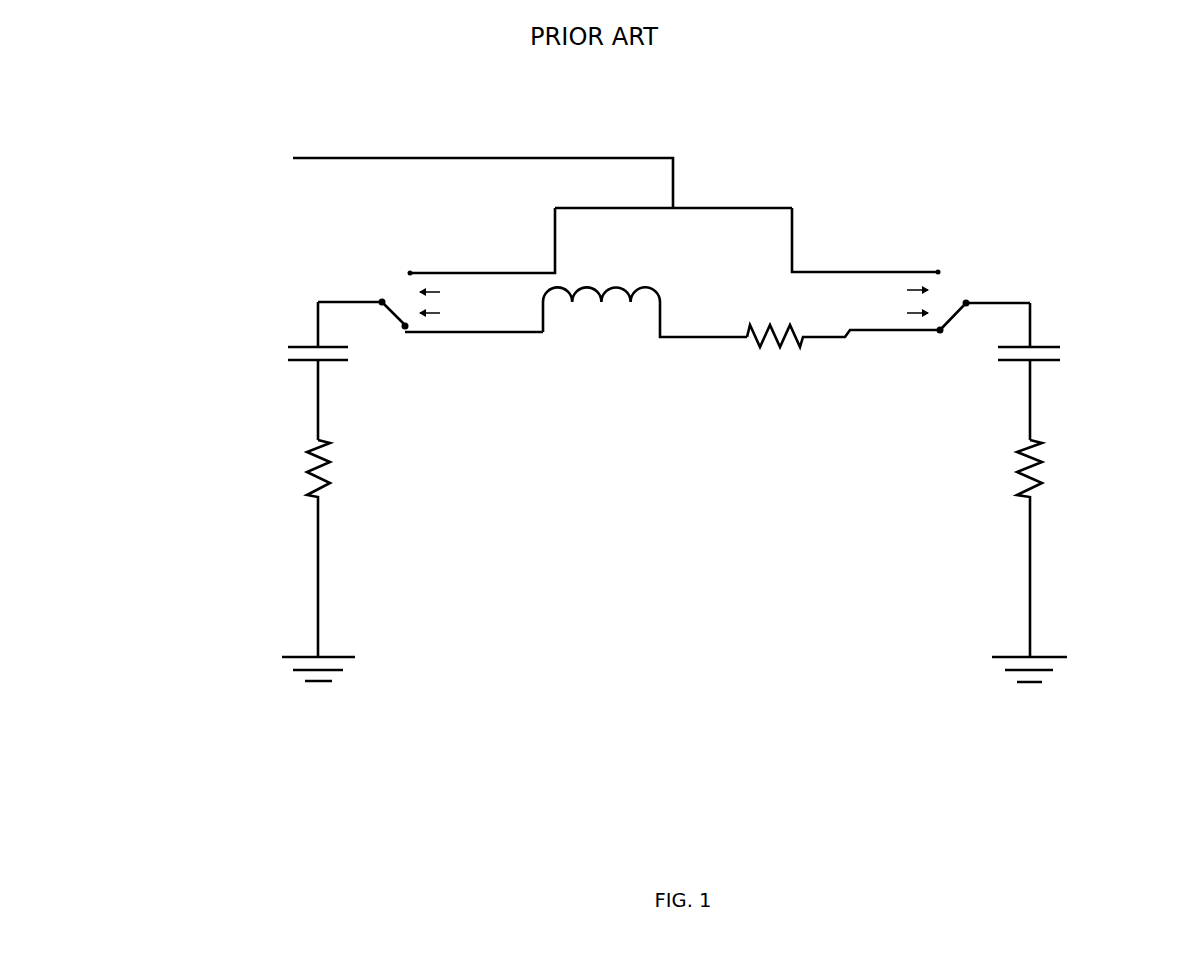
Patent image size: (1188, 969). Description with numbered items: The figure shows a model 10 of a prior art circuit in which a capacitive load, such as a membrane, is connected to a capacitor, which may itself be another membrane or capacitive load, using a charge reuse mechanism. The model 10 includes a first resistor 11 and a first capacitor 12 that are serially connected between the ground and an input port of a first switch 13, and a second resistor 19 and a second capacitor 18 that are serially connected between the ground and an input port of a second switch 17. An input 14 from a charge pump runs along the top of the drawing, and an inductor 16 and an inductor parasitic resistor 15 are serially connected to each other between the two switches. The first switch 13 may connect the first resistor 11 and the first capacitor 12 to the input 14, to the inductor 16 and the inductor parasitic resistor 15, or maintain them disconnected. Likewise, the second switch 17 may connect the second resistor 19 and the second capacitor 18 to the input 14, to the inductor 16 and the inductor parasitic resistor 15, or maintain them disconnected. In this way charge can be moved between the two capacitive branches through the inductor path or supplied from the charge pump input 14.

The model 10 is at (213, 775).
The first resistor R1 11 is at (1038, 455).
The first capacitor C1 12 is at (1078, 367).
The first switch 13 is at (965, 300).
The input from charge pump 14 is at (592, 203).
The inductor parasitic resistor 15 is at (800, 347).
The inductor L 16 is at (550, 322).
The second switch 17 is at (393, 327).
The second capacitor C2 18 is at (305, 340).
The second resistor R2 19 is at (333, 465).